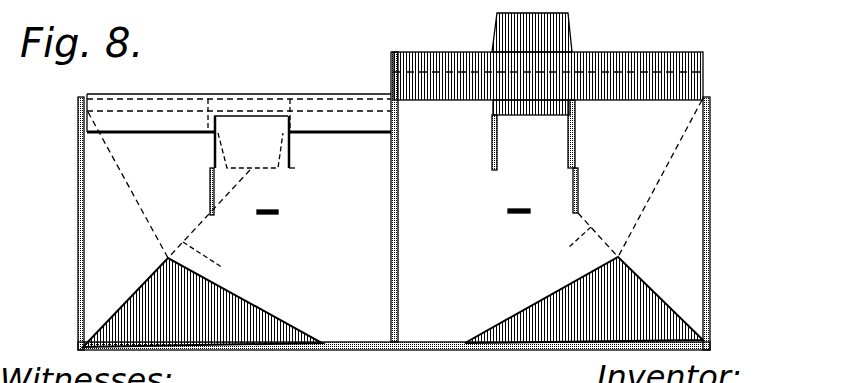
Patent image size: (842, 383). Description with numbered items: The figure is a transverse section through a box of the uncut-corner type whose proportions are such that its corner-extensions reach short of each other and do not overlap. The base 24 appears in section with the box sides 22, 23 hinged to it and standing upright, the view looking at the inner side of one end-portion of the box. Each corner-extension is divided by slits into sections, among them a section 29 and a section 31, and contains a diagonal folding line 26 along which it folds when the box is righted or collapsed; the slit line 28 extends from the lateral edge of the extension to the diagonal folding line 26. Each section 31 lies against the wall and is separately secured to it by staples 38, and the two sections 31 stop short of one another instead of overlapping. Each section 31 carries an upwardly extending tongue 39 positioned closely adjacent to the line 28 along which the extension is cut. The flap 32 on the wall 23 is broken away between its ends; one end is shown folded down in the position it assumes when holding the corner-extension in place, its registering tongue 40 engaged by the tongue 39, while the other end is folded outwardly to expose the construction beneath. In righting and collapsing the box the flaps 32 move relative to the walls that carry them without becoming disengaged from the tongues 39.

The box side 22 is at (78, 255).
The box side 23 is at (222, 328).
The base 24 is at (397, 350).
The diagonal folding line 26 is at (387, 259).
The line 28 is at (210, 190).
The section 29 is at (737, 285).
The section 31 is at (391, 260).
The flap 32 is at (152, 120).
The staple 38 is at (270, 204).
The tongue 39 is at (248, 127).
The tongue 40 is at (553, 35).